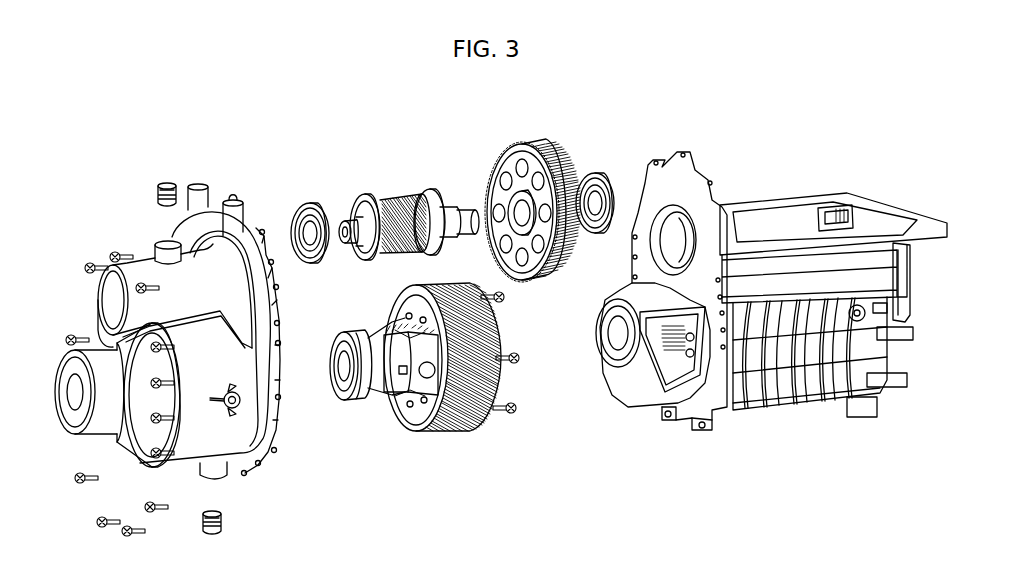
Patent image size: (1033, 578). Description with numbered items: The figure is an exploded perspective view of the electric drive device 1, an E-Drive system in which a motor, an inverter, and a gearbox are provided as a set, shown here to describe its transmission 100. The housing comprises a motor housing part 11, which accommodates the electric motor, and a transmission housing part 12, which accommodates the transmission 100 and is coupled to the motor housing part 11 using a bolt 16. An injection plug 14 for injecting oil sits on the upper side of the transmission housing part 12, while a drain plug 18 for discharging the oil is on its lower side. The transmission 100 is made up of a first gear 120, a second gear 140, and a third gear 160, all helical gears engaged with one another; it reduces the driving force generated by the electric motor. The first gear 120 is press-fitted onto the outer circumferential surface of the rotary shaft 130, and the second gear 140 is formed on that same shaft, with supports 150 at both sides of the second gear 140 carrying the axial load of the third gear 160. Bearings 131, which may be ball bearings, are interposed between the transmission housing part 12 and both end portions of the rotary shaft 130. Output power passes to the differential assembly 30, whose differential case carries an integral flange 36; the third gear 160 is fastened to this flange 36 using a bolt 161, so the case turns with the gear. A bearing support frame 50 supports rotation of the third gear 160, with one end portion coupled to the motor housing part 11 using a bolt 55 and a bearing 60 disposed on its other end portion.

The electric drive device 1 is at (771, 106).
The motor housing part 11 is at (778, 415).
The transmission housing part 12 is at (191, 455).
The injection plug 14 is at (166, 182).
The bolt 16 is at (68, 338).
The drain plug 18 is at (223, 520).
The differential assembly 30 is at (404, 415).
The flange 36 is at (428, 432).
The bearing support frame 50 is at (640, 417).
The bolt 55 is at (697, 421).
The bearing 60 is at (366, 392).
The transmission 100 is at (401, 163).
The first gear 120 is at (530, 139).
The rotary shaft 130 is at (438, 187).
The bearings 131 is at (313, 203).
The second gear 140 is at (398, 252).
The supports 150 is at (372, 194).
The third gear 160 is at (455, 437).
The bolt 161 is at (512, 418).